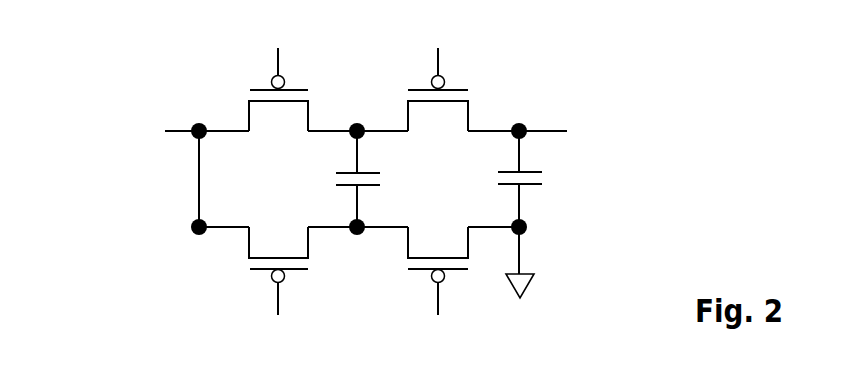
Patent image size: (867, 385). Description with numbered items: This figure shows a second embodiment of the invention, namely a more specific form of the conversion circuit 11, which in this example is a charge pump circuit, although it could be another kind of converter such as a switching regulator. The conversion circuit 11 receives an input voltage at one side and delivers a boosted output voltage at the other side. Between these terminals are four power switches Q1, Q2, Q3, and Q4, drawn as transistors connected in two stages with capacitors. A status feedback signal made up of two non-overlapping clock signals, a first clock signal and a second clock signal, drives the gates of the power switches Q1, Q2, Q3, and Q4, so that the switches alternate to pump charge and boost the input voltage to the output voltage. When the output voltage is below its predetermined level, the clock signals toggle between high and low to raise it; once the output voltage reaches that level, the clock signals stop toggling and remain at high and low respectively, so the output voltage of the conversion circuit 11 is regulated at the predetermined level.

The conversion circuit 11 is at (704, 48).
The power switch Q1 is at (278, 86).
The power switch Q2 is at (438, 86).
The power switch Q3 is at (278, 269).
The power switch Q4 is at (438, 271).